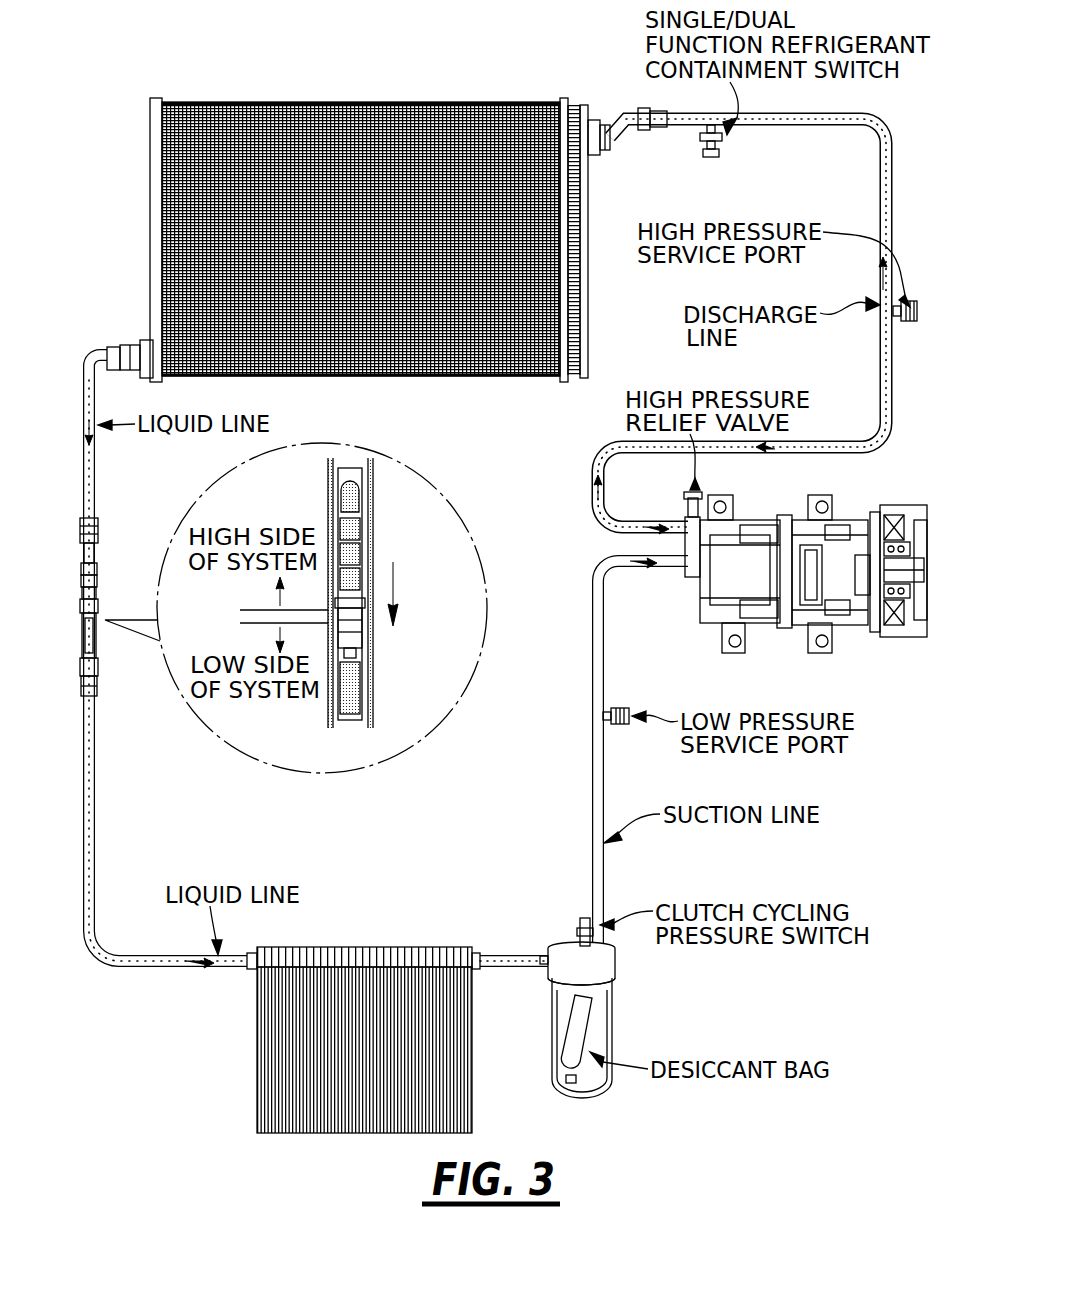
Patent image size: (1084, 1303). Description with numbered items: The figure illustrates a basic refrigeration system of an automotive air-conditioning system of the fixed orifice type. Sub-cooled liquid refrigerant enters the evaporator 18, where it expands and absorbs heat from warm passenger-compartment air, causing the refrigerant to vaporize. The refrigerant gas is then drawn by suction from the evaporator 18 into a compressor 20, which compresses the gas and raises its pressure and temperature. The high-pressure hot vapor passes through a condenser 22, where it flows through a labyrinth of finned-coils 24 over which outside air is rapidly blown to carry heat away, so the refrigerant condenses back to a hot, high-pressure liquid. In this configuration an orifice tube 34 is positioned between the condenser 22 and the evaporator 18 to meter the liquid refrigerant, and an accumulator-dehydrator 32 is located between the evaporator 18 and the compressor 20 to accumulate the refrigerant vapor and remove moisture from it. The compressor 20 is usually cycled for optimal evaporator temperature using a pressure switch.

The evaporator 18 is at (257, 1032).
The compressor 20 is at (930, 642).
The condenser 22 is at (398, 105).
The finned-coils 24 is at (478, 130).
The accumulator-dehydrator 32 is at (613, 1022).
The orifice tube 34 is at (97, 575).